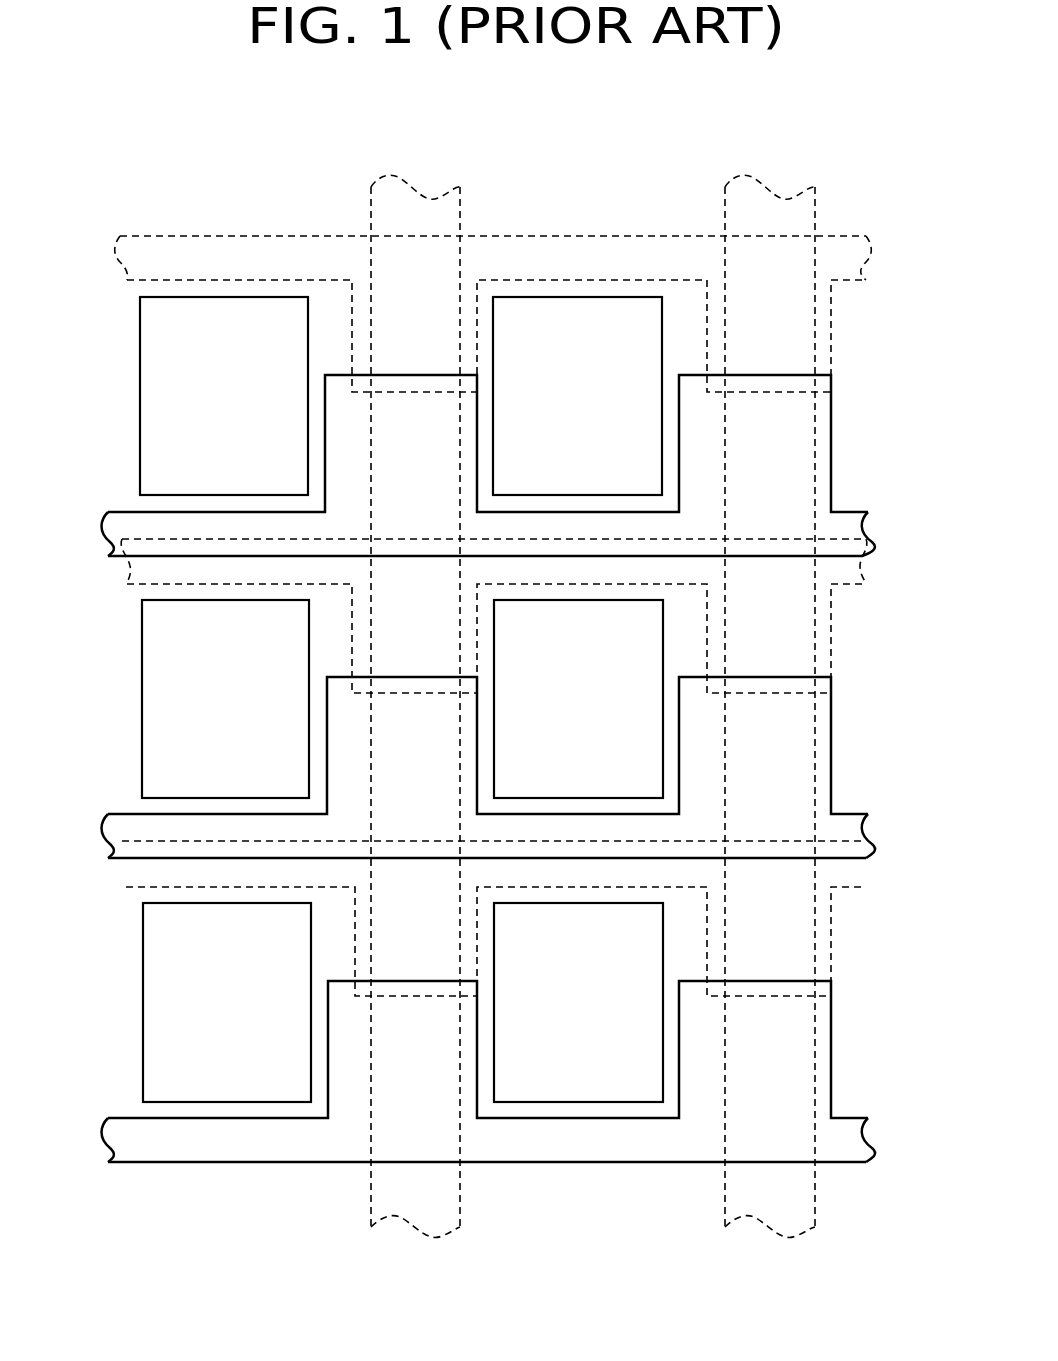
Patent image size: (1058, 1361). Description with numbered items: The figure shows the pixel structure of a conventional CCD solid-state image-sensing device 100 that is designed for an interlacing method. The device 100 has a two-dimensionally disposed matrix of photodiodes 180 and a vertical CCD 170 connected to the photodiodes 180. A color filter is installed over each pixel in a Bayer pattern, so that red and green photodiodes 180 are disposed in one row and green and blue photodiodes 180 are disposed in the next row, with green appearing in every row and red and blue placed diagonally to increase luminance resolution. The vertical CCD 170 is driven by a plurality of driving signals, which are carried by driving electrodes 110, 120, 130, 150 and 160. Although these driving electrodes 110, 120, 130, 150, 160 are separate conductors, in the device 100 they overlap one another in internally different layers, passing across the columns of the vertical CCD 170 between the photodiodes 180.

The CCD solid-state image-sensing device 100 is at (789, 152).
The driving electrode 110 is at (855, 512).
The driving electrode 120 is at (855, 1118).
The driving electrode 130 is at (850, 584).
The driving electrode 150 is at (855, 813).
The driving electrode 160 is at (850, 887).
The vertical CCD 170 is at (817, 1200).
The photodiode 180 is at (140, 397).